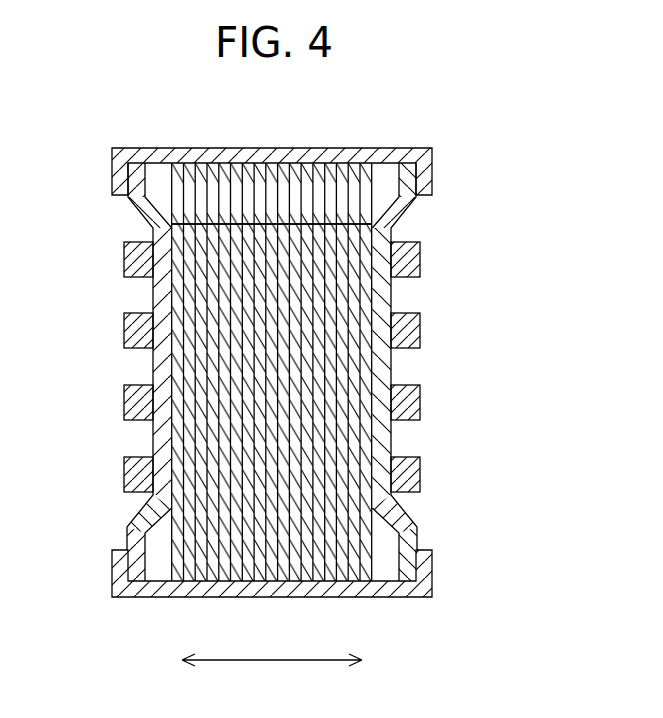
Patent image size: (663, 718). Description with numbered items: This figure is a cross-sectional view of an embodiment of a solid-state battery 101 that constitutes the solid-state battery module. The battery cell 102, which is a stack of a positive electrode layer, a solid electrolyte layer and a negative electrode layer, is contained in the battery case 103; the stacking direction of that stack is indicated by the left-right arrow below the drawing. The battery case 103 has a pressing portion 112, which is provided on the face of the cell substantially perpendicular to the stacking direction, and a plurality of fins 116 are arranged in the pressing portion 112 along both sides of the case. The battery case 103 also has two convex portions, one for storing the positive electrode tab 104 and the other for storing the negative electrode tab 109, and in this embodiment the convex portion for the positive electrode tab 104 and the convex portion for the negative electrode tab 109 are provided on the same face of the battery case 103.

The battery 101 is at (512, 152).
The battery cell 102 is at (277, 580).
The battery case 103 is at (410, 588).
The positive electrode tab 104 is at (227, 188).
The negative electrode tab 109 is at (227, 188).
The pressing portion 112 is at (128, 206).
The fins 116 is at (126, 265).